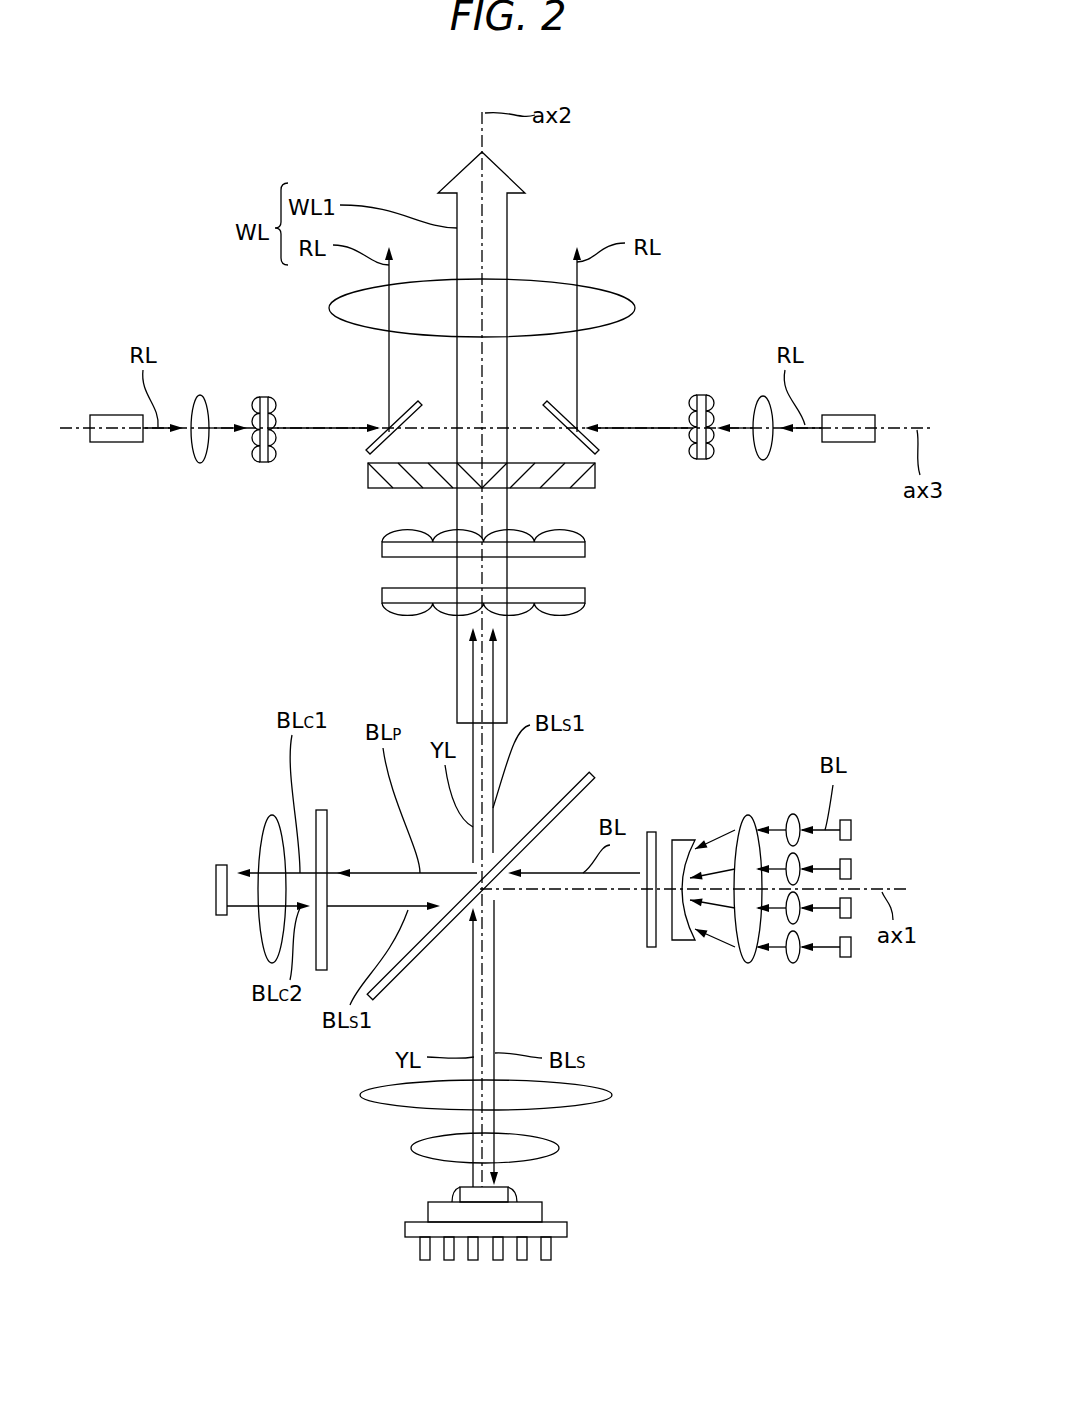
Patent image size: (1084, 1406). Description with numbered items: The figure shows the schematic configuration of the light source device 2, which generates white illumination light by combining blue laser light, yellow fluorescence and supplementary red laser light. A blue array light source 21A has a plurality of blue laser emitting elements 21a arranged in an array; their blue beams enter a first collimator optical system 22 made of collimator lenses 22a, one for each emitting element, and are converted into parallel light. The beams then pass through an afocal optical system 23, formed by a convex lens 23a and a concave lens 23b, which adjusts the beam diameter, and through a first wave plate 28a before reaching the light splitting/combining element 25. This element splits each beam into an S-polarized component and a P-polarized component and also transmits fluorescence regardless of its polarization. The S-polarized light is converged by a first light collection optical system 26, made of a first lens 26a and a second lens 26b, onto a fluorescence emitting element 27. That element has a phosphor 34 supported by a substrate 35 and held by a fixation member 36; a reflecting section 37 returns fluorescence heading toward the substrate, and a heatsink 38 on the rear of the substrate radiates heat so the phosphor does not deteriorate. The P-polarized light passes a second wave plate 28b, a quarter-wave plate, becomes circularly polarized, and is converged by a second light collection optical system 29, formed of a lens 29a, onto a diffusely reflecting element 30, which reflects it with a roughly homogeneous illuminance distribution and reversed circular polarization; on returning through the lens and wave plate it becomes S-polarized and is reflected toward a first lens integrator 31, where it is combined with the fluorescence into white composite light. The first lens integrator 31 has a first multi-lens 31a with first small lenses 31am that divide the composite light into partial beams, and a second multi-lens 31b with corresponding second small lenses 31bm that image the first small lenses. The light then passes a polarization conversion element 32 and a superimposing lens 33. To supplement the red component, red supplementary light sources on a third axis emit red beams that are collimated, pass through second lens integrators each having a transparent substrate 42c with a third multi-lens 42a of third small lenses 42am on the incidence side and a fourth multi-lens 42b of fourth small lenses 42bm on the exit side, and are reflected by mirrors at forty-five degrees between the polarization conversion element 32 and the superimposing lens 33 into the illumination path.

The light source device 2 is at (889, 346).
The blue array light source 21A is at (885, 840).
The blue laser emitting element 21a is at (855, 828).
The first collimator optical system 22 is at (799, 881).
The collimator lens 22a is at (797, 963).
The afocal optical system 23 is at (726, 839).
The convex lens 23a is at (755, 860).
The concave lens 23b is at (683, 840).
The light splitting/combining element 25 is at (426, 952).
The first light collection optical system 26 is at (554, 1128).
The first lens 26a is at (612, 1095).
The second lens 26b is at (559, 1148).
The fluorescence emitting element 27 is at (503, 1240).
The first wave plate 28a is at (650, 832).
The second wave plate 28b is at (323, 810).
The second light collection optical system 29 is at (237, 854).
The lens 29a is at (262, 940).
The diffusely reflecting element 30 is at (221, 863).
The first lens integrator 31 is at (496, 580).
The first multi-lens 31a is at (474, 605).
The first small lens 31am is at (395, 612).
The second multi-lens 31b is at (470, 551).
The second small lens 31bm is at (392, 538).
The polarization conversion element 32 is at (597, 485).
The superimposing lens 33 is at (605, 296).
The phosphor 34 is at (455, 1193).
The substrate 35 is at (435, 1212).
The fixation member 36 is at (515, 1197).
The reflecting section 37 is at (497, 1210).
The heatsink 38 is at (410, 1230).
The third multi-lens 42a is at (227, 429).
The fourth multi-lens 42b is at (304, 429).
The transparent substrate 42c is at (262, 397).
The third small lens 42am is at (252, 460).
The fourth small lens 42bm is at (276, 460).